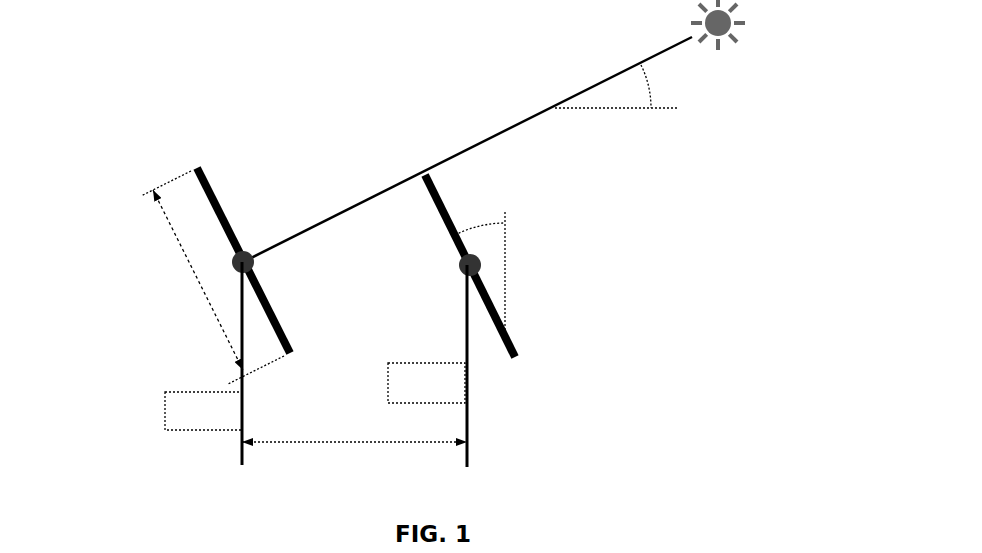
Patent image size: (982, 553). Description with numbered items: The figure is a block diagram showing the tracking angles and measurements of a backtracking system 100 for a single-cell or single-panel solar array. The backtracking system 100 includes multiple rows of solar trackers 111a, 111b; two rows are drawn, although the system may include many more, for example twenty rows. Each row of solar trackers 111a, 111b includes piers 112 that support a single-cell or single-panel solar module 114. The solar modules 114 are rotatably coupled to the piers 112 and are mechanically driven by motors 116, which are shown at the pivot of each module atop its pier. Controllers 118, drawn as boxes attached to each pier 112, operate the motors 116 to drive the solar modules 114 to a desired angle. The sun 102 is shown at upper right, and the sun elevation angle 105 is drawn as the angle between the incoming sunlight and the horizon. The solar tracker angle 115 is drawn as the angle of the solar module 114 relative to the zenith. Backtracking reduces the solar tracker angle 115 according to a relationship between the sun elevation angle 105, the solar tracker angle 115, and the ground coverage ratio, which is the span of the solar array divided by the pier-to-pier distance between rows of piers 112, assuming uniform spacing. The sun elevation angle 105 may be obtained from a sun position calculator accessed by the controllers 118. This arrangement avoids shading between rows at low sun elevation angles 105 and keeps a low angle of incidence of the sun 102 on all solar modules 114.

The backtracking system 100 is at (230, 102).
The sun 102 is at (728, 28).
The sun elevation angle 105 is at (687, 91).
The row of solar trackers 111a is at (348, 310).
The row of solar trackers 111b is at (408, 155).
The pier 112 is at (238, 457).
The solar module 114 is at (230, 222).
The solar tracker angle 115 is at (500, 197).
The motor 116 is at (230, 260).
The controller 118 is at (163, 413).